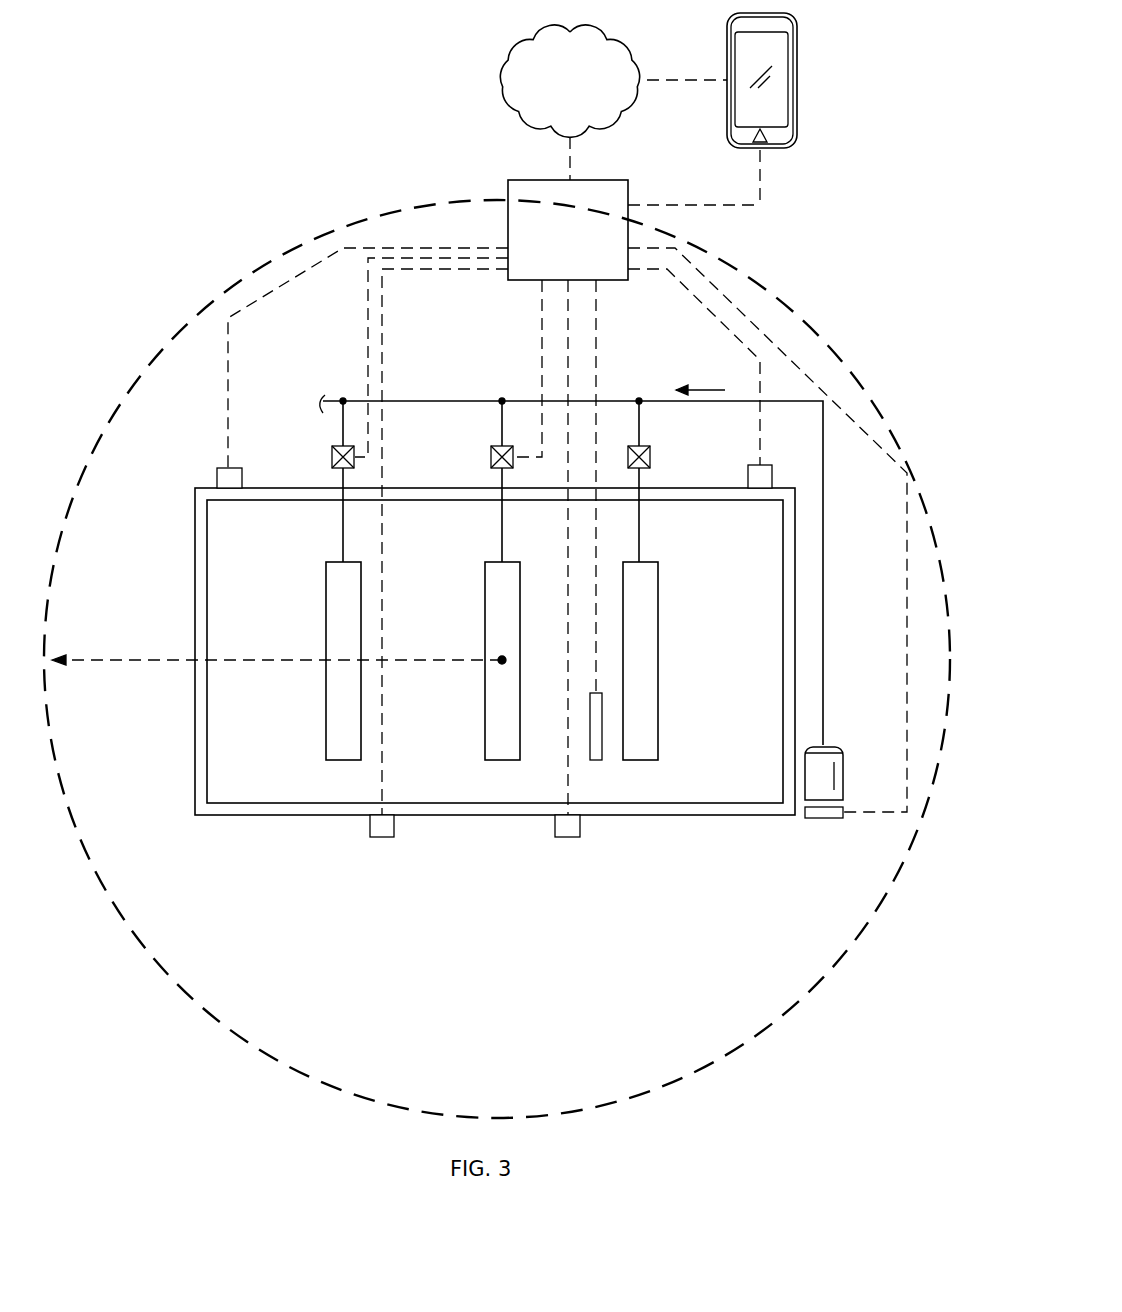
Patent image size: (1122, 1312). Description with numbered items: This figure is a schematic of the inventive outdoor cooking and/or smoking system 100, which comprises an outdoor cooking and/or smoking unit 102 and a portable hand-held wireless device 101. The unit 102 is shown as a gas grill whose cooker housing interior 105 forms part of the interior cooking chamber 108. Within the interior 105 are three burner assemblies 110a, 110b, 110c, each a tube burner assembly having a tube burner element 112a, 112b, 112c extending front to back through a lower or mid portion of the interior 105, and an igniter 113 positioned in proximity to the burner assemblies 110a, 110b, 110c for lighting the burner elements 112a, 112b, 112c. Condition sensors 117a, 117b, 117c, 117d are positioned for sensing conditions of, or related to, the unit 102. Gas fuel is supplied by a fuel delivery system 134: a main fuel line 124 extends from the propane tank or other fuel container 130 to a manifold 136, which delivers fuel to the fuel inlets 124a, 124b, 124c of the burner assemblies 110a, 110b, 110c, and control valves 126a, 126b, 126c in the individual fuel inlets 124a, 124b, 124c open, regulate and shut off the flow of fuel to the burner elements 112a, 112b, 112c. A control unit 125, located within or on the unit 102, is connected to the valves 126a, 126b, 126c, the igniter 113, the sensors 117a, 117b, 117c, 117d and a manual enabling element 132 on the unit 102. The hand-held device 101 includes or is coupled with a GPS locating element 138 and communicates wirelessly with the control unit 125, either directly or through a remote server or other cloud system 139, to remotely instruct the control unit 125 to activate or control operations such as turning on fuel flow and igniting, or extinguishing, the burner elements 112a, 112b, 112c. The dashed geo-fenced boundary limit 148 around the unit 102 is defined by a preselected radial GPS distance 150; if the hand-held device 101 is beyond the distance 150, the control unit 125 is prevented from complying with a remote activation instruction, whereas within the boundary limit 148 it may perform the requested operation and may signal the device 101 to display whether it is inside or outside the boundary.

The outdoor cooking and/or smoking system 100 is at (265, 132).
The portable hand-held wireless device 101 is at (797, 62).
The outdoor cooking and/or smoking unit 102 is at (282, 822).
The interior of the cooker housing 105 is at (271, 531).
The interior cooking chamber 108 is at (318, 544).
The burner assembly 110a is at (326, 642).
The burner assembly 110b is at (485, 642).
The burner assembly 110c is at (658, 642).
The burner element 112a is at (330, 686).
The burner element 112b is at (490, 686).
The burner element 112c is at (655, 686).
The igniter 113 is at (603, 746).
The condition sensor 117a is at (572, 838).
The condition sensor 117b is at (824, 820).
The condition sensor 117c is at (380, 838).
The condition sensor 117d is at (216, 480).
The main fuel line 124 is at (823, 577).
The fuel inlet 124a is at (340, 442).
The fuel inlet 124b is at (500, 442).
The fuel inlet 124c is at (645, 442).
The control unit 125 is at (628, 283).
The control valve 126a is at (331, 457).
The control valve 126b is at (490, 457).
The control valve 126c is at (650, 466).
The fuel container 130 is at (828, 745).
The manual enabling element 132 is at (762, 465).
The fuel delivery system 134 is at (522, 398).
The manifold 136 is at (352, 398).
The GPS locating element 138 is at (768, 140).
The cloud system 139 is at (592, 95).
The geo-fenced boundary limit 148 is at (222, 300).
The preselected radial GPS distance 150 is at (140, 662).